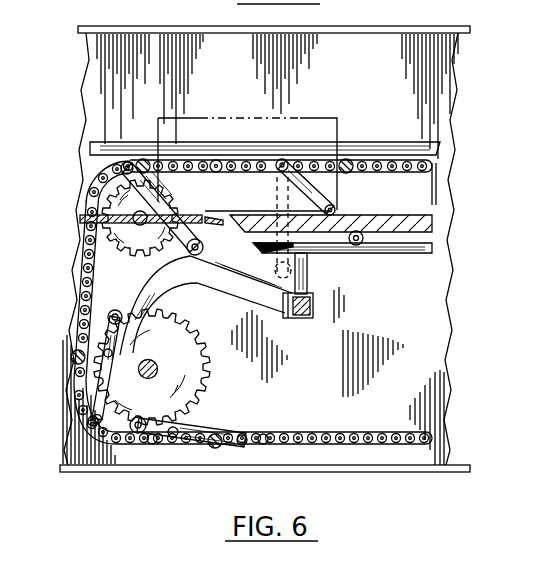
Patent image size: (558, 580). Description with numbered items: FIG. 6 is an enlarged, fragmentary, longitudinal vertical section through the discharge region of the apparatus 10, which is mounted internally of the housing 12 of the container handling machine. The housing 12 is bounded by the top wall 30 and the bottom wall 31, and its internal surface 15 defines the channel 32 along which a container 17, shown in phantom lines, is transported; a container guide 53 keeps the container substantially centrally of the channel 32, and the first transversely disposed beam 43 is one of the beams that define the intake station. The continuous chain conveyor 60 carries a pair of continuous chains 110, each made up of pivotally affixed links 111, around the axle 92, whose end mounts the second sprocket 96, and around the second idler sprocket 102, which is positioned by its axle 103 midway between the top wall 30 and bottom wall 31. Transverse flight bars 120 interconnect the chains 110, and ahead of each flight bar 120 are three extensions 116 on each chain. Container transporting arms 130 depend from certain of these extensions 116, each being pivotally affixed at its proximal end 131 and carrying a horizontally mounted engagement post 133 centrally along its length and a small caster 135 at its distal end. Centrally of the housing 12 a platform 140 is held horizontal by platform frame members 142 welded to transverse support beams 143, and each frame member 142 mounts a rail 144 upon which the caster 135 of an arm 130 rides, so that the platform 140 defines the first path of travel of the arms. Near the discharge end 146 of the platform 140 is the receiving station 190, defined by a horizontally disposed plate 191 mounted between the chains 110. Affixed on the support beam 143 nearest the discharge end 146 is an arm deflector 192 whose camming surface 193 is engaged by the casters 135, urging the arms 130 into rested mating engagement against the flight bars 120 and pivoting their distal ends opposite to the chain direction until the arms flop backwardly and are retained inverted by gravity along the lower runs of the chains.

The apparatus 10 is at (557, 82).
The housing 12 is at (392, 27).
The internal surface 15 is at (303, 45).
The container 17 is at (314, 118).
The top wall 30 is at (170, 27).
The bottom wall 31 is at (360, 472).
The channel 32 is at (430, 80).
The first transversely disposed beam 43 is at (548, 121).
The container guide 53 is at (418, 148).
The continuous chain conveyor 60 is at (276, 430).
The axle 92 is at (156, 364).
The second sprocket 96 is at (195, 374).
The second idler sprocket 102 is at (86, 238).
The axle 103 is at (112, 192).
The continuous chain 110 is at (355, 433).
The pivotally affixed link 111 is at (235, 160).
The extension 116 is at (215, 160).
The flight bar 120 is at (352, 146).
The container transporting arm 130 is at (142, 160).
The proximal end 131 is at (278, 165).
The engagement post 133 is at (336, 208).
The caster 135 is at (357, 246).
The platform 140 is at (404, 282).
The platform frame member 142 is at (307, 272).
The support beam 143 is at (306, 318).
The rail 144 is at (409, 246).
The discharge end 146 is at (258, 246).
The receiving station 190 is at (82, 219).
The horizontally disposed plate 191 is at (158, 197).
The arm deflector 192 is at (262, 290).
The camming surface 193 is at (145, 284).